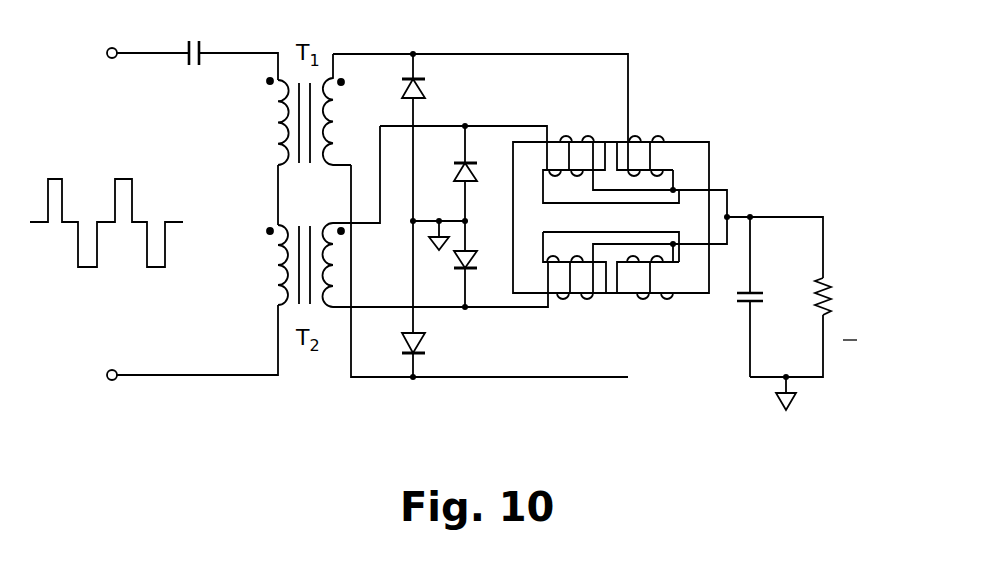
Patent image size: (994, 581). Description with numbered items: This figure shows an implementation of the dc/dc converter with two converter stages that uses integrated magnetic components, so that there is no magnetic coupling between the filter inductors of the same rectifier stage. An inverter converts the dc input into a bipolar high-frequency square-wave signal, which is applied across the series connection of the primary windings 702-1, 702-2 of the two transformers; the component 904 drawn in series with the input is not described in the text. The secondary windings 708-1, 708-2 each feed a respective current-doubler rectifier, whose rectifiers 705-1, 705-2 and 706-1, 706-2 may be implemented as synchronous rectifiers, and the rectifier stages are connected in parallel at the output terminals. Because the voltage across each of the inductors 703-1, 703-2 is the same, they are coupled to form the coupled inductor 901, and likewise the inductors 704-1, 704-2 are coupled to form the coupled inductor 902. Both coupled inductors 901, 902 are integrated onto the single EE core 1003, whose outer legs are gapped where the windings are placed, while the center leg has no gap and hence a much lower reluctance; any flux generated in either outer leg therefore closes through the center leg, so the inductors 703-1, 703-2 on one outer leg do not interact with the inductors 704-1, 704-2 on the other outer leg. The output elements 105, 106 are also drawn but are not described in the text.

The blocking capacitor CB 904 is at (202, 47).
The primary winding 702-1 is at (277, 130).
The primary winding 702-2 is at (277, 257).
The secondary winding 708-1 is at (336, 117).
The secondary winding 708-2 is at (337, 293).
The rectifier 705-1 is at (418, 70).
The rectifier 705-2 is at (466, 149).
The rectifier 706-1 is at (418, 357).
The rectifier 706-2 is at (470, 272).
The inductor 703-1 is at (673, 137).
The inductor 703-2 is at (565, 137).
The inductor 704-1 is at (670, 298).
The inductor 704-2 is at (593, 297).
The EE core 1003 is at (712, 163).
The coupled inductor 901 is at (740, 114).
The coupled inductor 902 is at (593, 382).
The filter capacitor CF 105 is at (752, 292).
The load resistor RL 106 is at (836, 297).